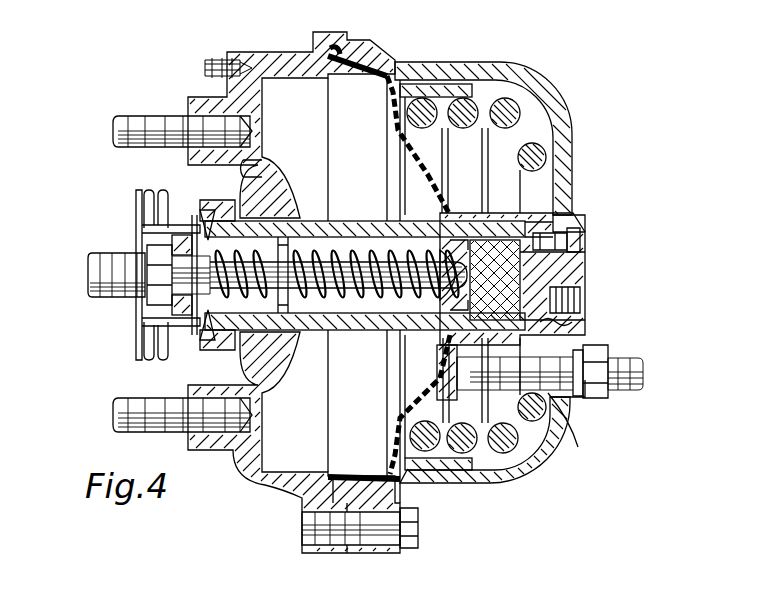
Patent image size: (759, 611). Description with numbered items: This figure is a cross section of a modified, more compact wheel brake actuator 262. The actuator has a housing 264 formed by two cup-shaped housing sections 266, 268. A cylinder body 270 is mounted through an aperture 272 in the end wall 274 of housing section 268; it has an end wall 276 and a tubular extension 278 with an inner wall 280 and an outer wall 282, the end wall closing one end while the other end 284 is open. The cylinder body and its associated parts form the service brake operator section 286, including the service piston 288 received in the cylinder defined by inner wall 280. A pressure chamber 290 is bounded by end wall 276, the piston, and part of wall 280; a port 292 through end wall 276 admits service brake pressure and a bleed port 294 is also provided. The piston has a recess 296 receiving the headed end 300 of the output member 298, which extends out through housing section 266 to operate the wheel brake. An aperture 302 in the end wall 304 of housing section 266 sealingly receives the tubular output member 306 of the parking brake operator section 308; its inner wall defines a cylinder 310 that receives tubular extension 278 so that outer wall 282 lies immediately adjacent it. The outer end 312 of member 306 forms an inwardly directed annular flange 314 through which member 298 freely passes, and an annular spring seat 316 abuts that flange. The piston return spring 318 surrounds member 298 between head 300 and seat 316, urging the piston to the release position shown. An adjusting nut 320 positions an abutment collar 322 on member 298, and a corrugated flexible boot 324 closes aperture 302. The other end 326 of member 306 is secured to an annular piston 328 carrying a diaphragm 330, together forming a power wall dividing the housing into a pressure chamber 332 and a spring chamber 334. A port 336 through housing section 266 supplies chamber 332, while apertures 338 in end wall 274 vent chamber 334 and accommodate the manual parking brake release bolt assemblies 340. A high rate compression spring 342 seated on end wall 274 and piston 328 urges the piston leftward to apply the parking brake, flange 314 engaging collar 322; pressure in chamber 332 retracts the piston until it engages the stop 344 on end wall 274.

The actuator 262 is at (221, 36).
The housing 264 is at (307, 48).
The housing section 266 is at (258, 478).
The housing section 268 is at (427, 484).
The cylinder body 270 is at (580, 324).
The aperture 272 is at (577, 390).
The end wall 274 is at (545, 138).
The end wall 276 is at (586, 277).
The tubular extension 278 is at (381, 370).
The inner cylinder wall 280 is at (520, 307).
The outer cylinder wall 282 is at (362, 330).
The open end 284 is at (278, 318).
The service brake operator section 286 is at (594, 268).
The service piston 288 is at (570, 258).
The pressure chamber 290 is at (562, 225).
The port 292 is at (583, 301).
The bleed port 294 is at (583, 241).
The recess 296 is at (440, 223).
The output member 298 is at (90, 273).
The headed end 300 is at (443, 302).
The aperture 302 is at (186, 225).
The end wall 304 is at (215, 113).
The output member 306 is at (357, 221).
The parking brake operator section 308 is at (584, 195).
The cylinder 310 is at (287, 199).
The outer end 312 is at (198, 324).
The annular flange 314 is at (168, 337).
The spring seat 316 is at (224, 250).
The piston return spring 318 is at (268, 293).
The adjusting nut 320 is at (158, 270).
The abutment collar 322 is at (175, 200).
The flexible boot 324 is at (135, 207).
The other end 326 is at (445, 210).
The annular piston 328 is at (453, 88).
The diaphragm 330 is at (392, 72).
The pressure chamber 332 is at (283, 84).
The spring chamber 334 is at (536, 119).
The port 336 is at (205, 66).
The apertures 338 is at (582, 429).
The manual parking brake release bolt assemblies 340 is at (626, 372).
The compression spring 342 is at (541, 161).
The stop 344 is at (474, 166).